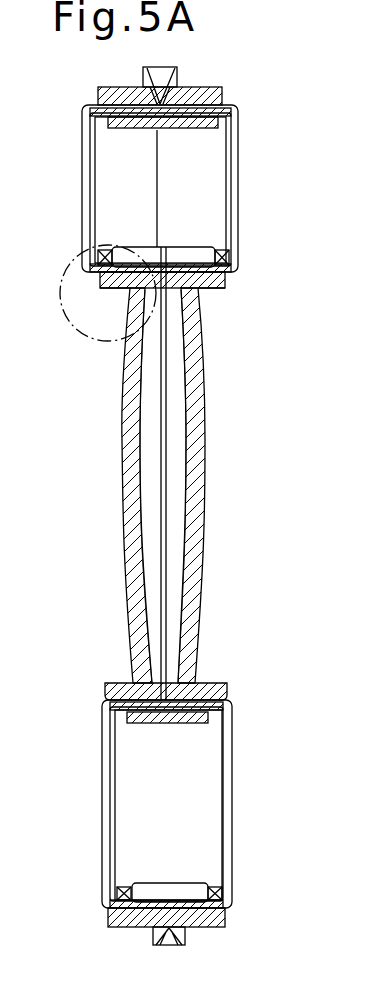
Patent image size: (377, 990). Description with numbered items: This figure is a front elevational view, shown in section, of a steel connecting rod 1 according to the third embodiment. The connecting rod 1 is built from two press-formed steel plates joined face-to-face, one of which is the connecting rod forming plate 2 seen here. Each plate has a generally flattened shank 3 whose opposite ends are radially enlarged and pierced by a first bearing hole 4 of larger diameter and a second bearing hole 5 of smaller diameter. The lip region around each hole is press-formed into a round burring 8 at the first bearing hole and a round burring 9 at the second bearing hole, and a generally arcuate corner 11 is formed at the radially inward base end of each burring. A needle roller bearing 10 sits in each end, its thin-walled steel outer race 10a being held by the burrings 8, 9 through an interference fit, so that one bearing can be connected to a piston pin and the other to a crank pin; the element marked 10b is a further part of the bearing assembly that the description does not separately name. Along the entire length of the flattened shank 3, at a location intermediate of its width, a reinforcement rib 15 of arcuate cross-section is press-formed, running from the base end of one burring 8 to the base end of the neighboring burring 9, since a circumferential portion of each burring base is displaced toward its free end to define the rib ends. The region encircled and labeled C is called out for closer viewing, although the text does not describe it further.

The steel connecting rod 1 is at (145, 485).
The first connecting rod forming plate 2 is at (152, 435).
The flattened shank 3 is at (197, 492).
The first bearing hole 4 is at (110, 249).
The second bearing hole 5 is at (123, 721).
The round burring 8 is at (106, 289).
The round burring 9 is at (120, 688).
The bearing 10 is at (183, 247).
The thin-walled steel outer race 10a is at (230, 272).
The pin 10b is at (205, 252).
The corner 11 is at (157, 263).
The reinforcement rib 15 is at (167, 485).
The center region C is at (95, 343).